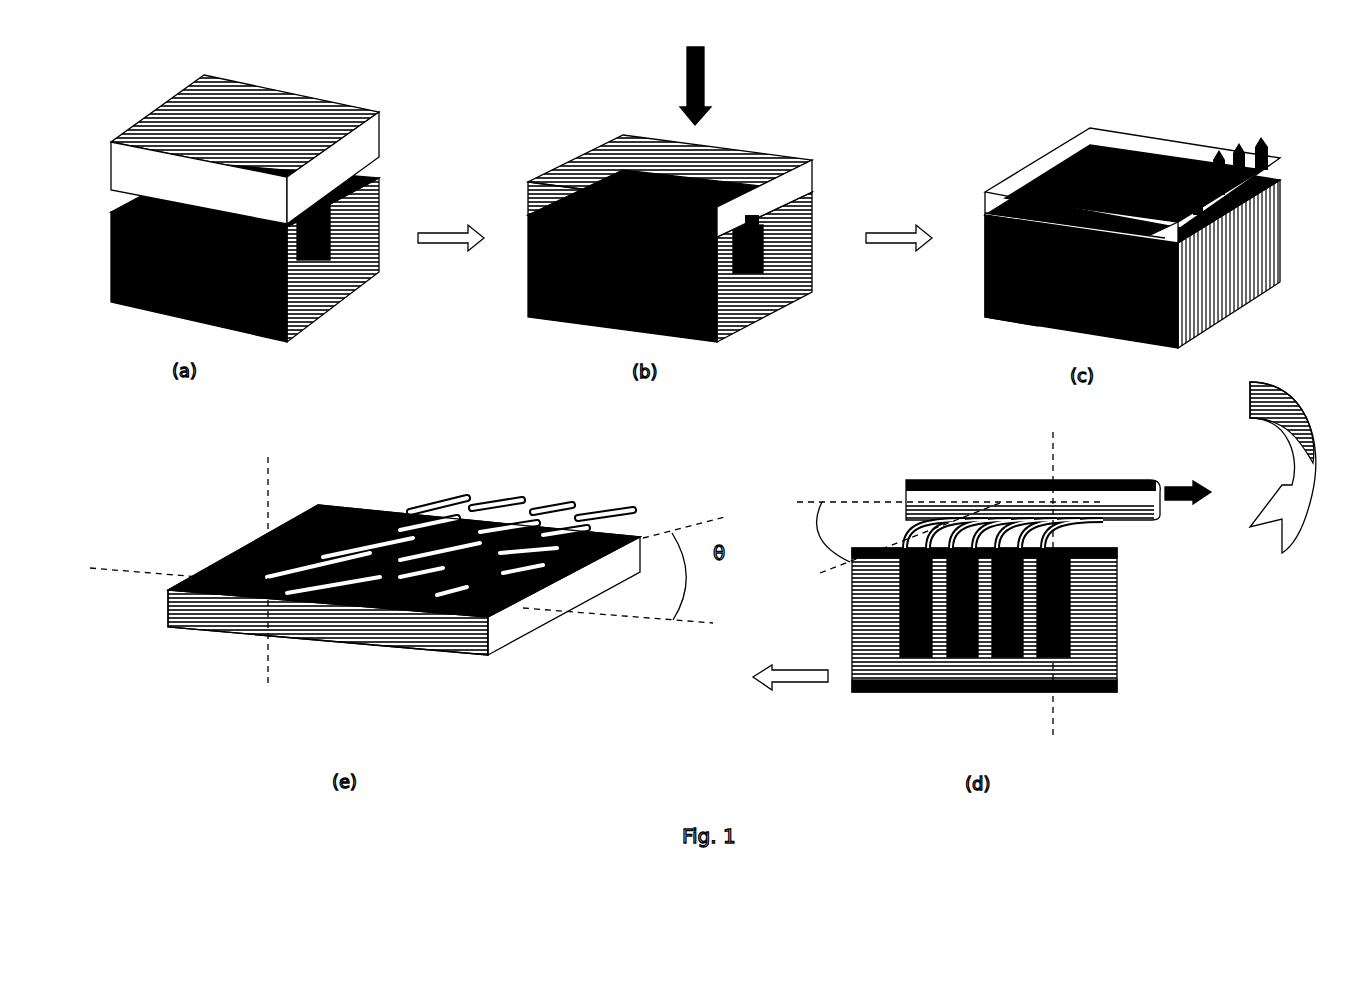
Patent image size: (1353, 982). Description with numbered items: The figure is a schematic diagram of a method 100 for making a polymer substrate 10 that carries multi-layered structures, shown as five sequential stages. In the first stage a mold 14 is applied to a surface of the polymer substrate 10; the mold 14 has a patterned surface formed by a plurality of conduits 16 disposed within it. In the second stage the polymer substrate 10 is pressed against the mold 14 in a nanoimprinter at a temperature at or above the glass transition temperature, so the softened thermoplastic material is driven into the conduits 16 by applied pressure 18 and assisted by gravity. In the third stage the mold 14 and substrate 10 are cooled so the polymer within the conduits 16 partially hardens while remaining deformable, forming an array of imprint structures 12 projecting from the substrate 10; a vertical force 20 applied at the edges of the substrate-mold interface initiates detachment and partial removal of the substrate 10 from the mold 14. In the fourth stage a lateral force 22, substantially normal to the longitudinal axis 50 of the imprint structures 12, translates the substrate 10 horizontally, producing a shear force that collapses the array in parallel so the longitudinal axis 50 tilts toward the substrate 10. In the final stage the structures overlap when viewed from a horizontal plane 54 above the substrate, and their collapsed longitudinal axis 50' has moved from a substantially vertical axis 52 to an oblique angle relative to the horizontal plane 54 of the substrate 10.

The polymer substrate 10 is at (373, 147).
The imprint structures 12 is at (757, 227).
The mold 14 is at (372, 265).
The conduits 16 is at (297, 268).
The applied pressure 18 is at (708, 86).
The vertical force 20 is at (1232, 165).
The lateral force 22 is at (1188, 478).
The longitudinal axis 50 is at (1068, 588).
The collapsed longitudinal axis 50' is at (821, 540).
The vertical axis 52 is at (251, 574).
The horizontal plane 54 is at (596, 538).
The method 100 is at (220, 740).